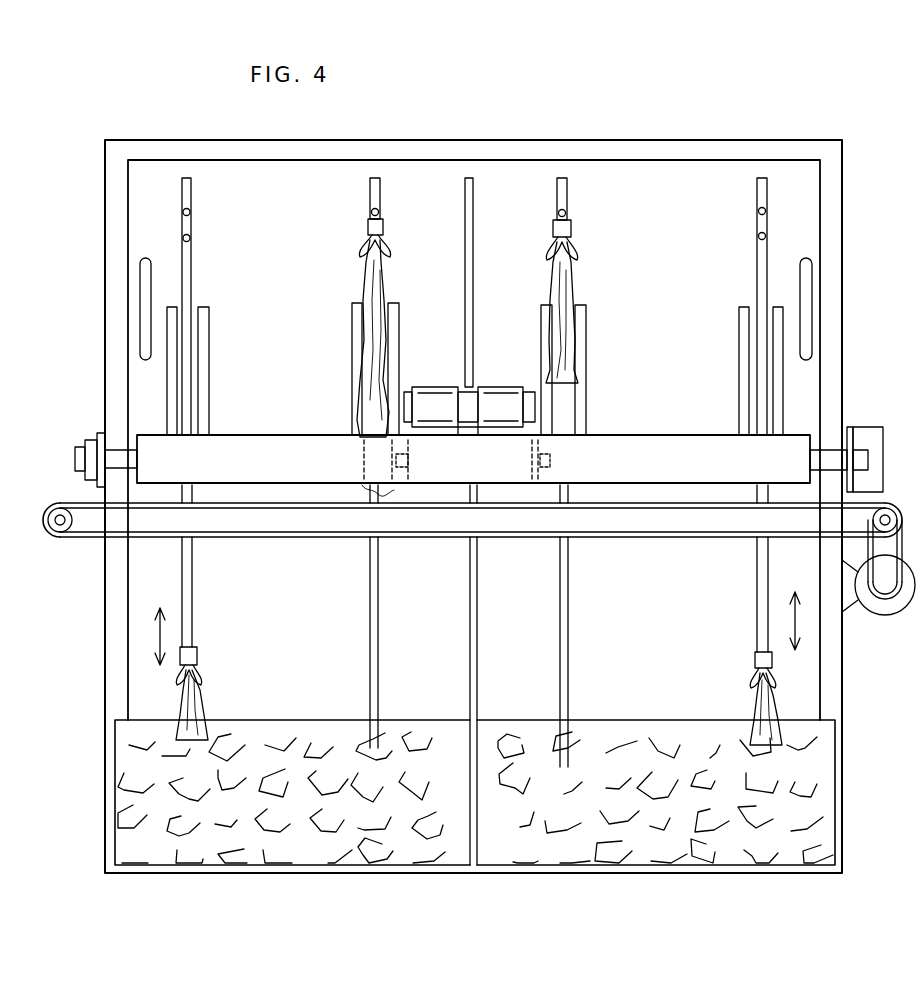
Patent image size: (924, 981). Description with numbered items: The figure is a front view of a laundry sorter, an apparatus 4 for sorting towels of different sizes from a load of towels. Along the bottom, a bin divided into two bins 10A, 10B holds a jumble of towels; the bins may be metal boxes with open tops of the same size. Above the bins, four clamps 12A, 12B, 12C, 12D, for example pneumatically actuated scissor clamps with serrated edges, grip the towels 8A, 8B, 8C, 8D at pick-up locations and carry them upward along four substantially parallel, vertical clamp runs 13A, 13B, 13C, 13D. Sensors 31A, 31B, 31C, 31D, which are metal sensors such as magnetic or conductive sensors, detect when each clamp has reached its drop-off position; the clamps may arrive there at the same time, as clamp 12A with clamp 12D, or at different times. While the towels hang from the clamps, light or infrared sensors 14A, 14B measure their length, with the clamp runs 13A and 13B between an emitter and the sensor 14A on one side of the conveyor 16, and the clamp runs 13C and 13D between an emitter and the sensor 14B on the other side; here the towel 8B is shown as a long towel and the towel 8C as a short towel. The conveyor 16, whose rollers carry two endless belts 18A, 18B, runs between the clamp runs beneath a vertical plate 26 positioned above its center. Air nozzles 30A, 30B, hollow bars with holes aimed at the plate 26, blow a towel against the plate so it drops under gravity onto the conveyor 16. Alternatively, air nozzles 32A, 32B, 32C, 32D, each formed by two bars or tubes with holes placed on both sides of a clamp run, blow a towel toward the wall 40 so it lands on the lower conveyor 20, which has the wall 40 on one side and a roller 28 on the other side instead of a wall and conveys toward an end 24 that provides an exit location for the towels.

The apparatus 4 is at (68, 460).
The wall 40 is at (421, 506).
The towel 8A is at (198, 702).
The towel 8B is at (376, 331).
The towel 8C is at (566, 322).
The towel 8D is at (760, 716).
The bin 10A is at (292, 870).
The bin 10B is at (653, 870).
The clamp 12A is at (197, 661).
The clamp 12B is at (368, 229).
The clamp 12C is at (572, 230).
The clamp 12D is at (755, 660).
The clamp run 13A is at (193, 578).
The clamp run 13B is at (371, 580).
The clamp run 13C is at (568, 576).
The clamp run 13D is at (757, 580).
The sensor 14A is at (397, 460).
The sensor 14B is at (548, 460).
The conveyor 16 is at (465, 387).
The belt 18A is at (424, 387).
The belt 18B is at (503, 387).
The conveyor 20 is at (78, 526).
The end 24 is at (48, 504).
The plate 26 is at (474, 232).
The roller 28 is at (642, 435).
The air nozzle 30A is at (140, 280).
The air nozzle 30B is at (812, 281).
The sensor 31A is at (187, 212).
The sensor 31B is at (374, 211).
The sensor 31C is at (563, 213).
The sensor 31D is at (760, 211).
The air nozzle 32A is at (203, 307).
The air nozzle 32B is at (393, 303).
The air nozzle 32C is at (580, 305).
The air nozzle 32D is at (744, 307).